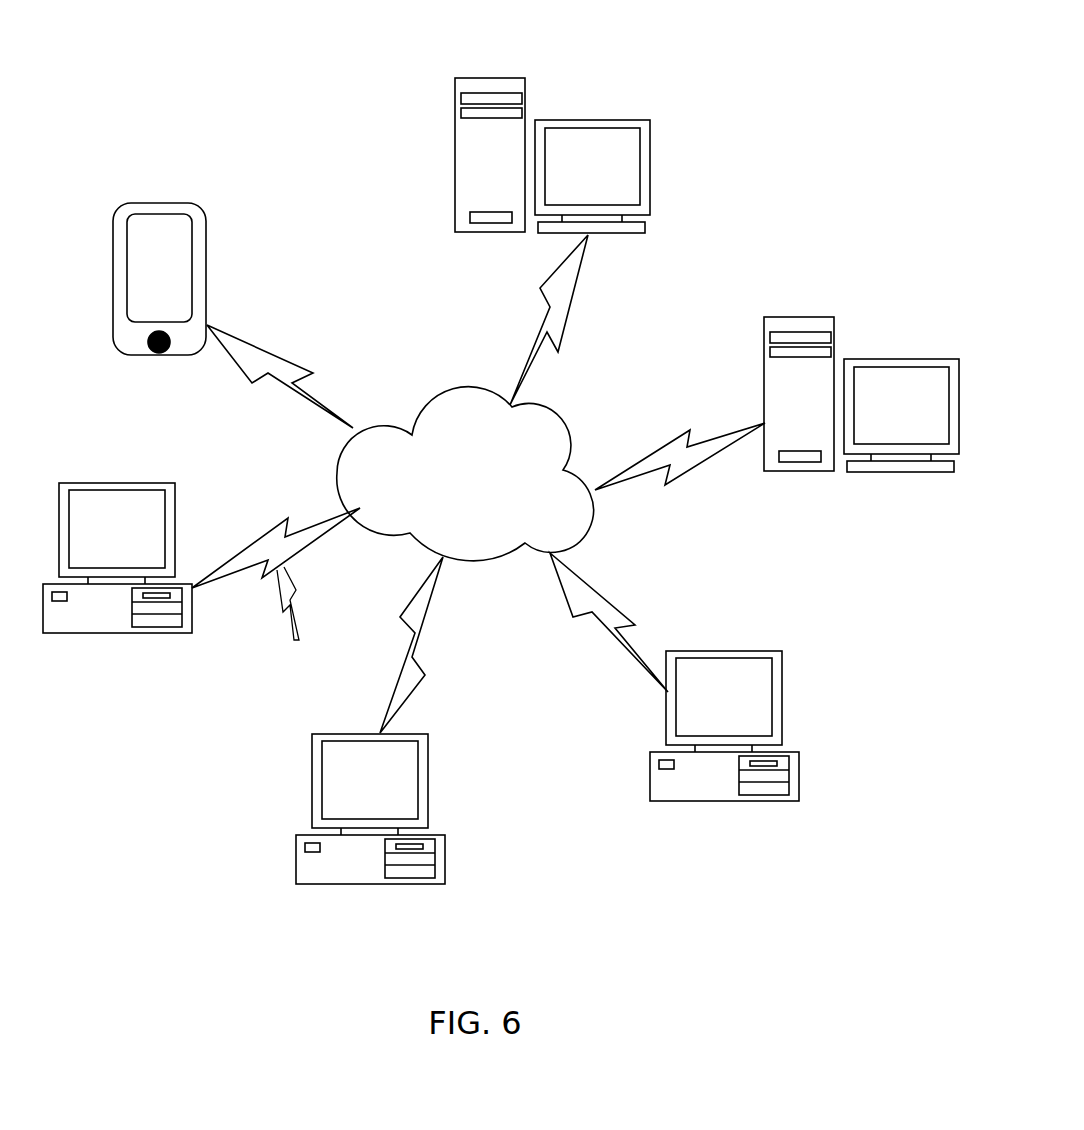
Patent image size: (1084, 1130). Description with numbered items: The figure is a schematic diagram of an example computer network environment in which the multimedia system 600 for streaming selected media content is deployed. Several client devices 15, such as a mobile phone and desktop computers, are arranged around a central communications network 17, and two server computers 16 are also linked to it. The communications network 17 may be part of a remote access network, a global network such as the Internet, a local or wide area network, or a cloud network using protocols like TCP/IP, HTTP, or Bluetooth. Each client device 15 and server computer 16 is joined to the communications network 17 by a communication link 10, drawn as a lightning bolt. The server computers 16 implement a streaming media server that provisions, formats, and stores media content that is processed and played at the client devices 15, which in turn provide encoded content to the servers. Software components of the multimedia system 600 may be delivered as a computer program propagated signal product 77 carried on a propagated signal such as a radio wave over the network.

The multimedia system 600 is at (828, 64).
The communications network 17 is at (458, 507).
The client device 15 is at (160, 358).
The server computer 16 is at (592, 120).
The communication link 10 is at (291, 362).
The computer program propagated signal product 77 is at (296, 628).